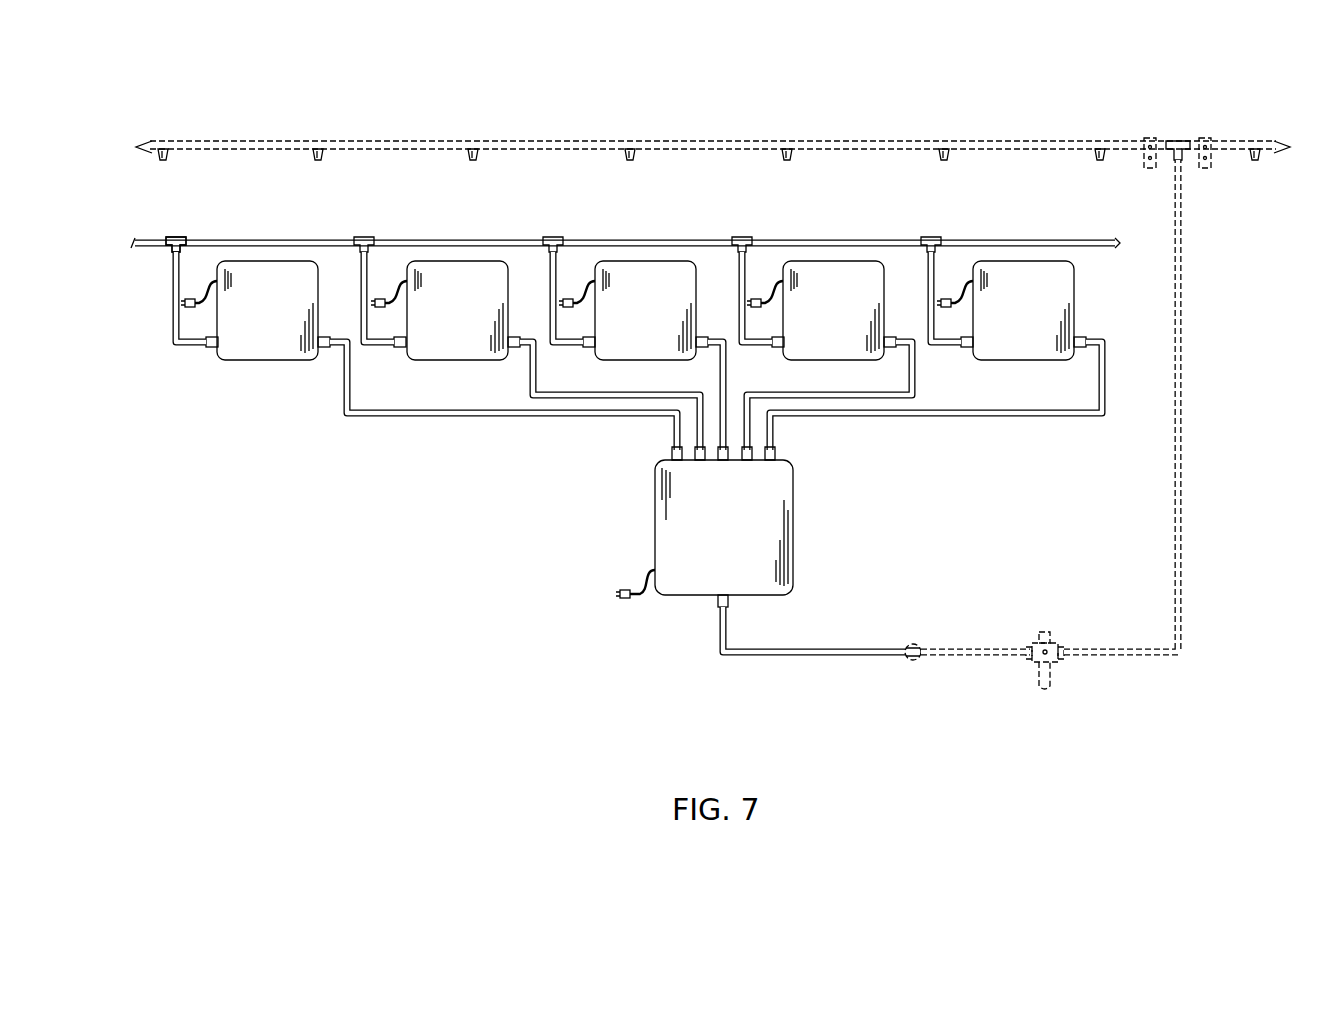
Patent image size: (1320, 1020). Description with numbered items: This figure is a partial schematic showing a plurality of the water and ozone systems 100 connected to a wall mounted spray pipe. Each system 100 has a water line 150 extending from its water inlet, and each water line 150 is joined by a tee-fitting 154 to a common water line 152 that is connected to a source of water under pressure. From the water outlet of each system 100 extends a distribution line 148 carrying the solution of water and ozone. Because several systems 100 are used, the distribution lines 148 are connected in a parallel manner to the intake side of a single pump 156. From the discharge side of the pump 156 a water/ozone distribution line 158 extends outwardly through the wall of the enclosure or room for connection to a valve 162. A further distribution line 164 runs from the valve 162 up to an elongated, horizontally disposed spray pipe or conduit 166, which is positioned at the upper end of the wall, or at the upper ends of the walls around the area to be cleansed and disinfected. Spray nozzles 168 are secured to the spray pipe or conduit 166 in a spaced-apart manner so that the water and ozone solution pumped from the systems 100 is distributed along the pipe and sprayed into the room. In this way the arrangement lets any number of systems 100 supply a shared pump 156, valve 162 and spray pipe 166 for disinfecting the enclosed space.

The system 100 is at (253, 380).
The distribution line 148 is at (420, 418).
The water line 150 is at (176, 288).
The water line 152 is at (300, 238).
The tee-fitting 154 is at (172, 237).
The pump 156 is at (690, 512).
The water/ozone distribution line 158 is at (810, 650).
The valve 162 is at (1050, 647).
The distribution line 164 is at (1182, 385).
The spray pipe or conduit 166 is at (995, 140).
The spray nozzles 168 is at (942, 140).